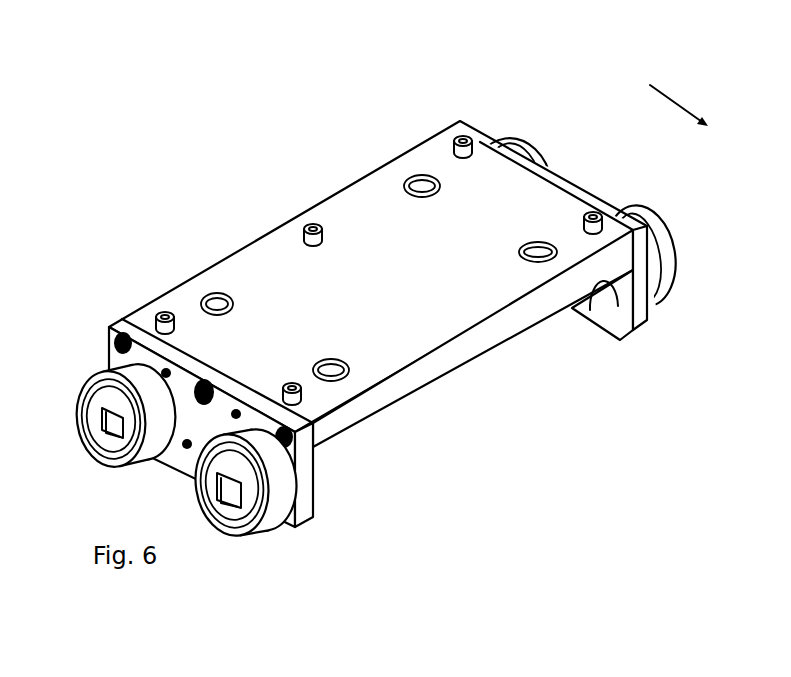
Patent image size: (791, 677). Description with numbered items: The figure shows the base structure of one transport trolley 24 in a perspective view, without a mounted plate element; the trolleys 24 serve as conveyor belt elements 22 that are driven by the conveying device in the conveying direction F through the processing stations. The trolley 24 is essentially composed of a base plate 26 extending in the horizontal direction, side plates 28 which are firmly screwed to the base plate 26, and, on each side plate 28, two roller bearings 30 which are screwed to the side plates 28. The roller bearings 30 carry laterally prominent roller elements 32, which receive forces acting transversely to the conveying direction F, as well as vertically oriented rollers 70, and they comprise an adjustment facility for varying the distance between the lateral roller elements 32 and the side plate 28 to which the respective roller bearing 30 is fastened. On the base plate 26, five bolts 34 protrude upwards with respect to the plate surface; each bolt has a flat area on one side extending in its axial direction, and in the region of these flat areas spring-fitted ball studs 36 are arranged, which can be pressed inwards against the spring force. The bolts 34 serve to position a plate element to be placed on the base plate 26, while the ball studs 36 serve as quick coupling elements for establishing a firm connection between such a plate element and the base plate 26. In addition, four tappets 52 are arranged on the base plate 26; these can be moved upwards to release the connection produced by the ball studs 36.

The conveyor belt element 22 is at (387, 312).
The trolley 24 is at (303, 85).
The base plate 26 is at (410, 330).
The side plate 28 is at (303, 507).
The roller bearing 30 is at (387, 350).
The roller element 32 is at (102, 407).
The bolt 34 is at (376, 210).
The ball stud 36 is at (290, 385).
The tappet 52 is at (213, 293).
The roller 70 is at (100, 370).